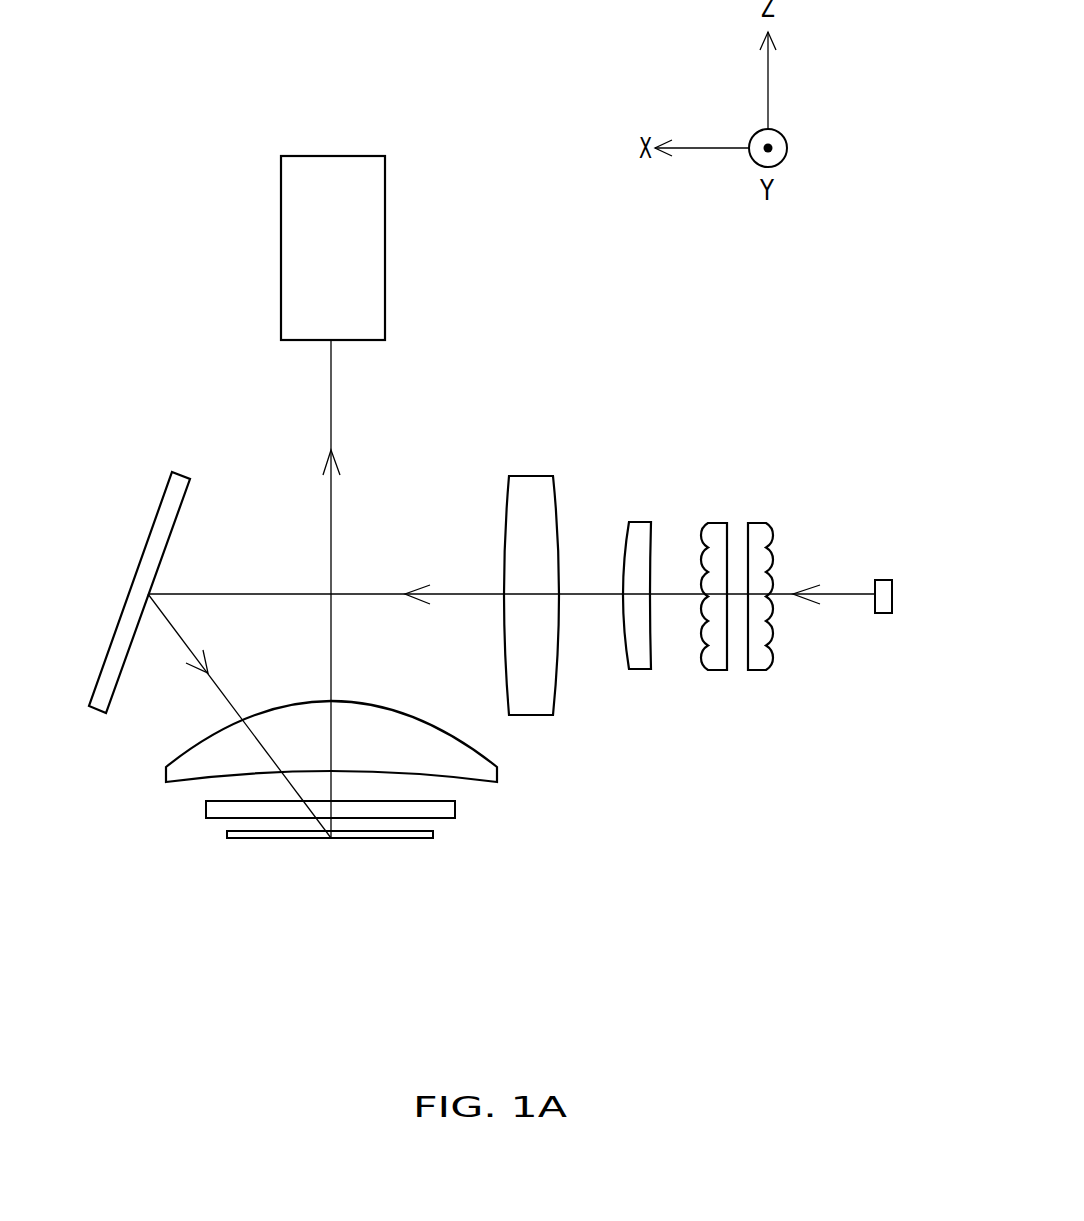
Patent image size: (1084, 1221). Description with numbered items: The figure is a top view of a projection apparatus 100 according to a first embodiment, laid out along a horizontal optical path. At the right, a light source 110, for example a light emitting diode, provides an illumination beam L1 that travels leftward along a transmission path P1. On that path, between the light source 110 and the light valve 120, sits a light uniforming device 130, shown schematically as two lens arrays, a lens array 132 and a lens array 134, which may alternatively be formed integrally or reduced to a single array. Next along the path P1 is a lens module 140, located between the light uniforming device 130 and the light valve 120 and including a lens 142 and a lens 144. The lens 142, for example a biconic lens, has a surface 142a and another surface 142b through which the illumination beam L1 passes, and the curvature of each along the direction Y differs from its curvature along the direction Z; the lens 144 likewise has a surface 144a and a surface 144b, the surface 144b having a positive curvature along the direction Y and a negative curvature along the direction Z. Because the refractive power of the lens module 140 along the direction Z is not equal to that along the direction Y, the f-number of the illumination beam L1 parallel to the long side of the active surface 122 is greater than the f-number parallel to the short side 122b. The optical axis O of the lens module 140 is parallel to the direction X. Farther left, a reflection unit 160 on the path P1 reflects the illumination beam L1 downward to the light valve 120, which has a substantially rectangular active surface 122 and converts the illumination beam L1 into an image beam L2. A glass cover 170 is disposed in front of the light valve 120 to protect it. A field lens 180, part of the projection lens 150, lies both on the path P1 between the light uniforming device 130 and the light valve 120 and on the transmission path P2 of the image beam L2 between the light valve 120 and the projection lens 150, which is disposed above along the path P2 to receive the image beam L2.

The projection apparatus 100 is at (885, 982).
The light source 110 is at (882, 613).
The light valve 120 is at (370, 838).
The active surface 122 is at (258, 816).
The short side 122b is at (227, 835).
The light uniforming device 130 is at (786, 772).
The lens array 132 is at (757, 658).
The lens array 134 is at (717, 660).
The lens module 140 is at (617, 374).
The lens 142 is at (530, 497).
The surface 142a is at (567, 523).
The surface 142b is at (508, 517).
The lens 144 is at (638, 533).
The surface 144a is at (662, 543).
The surface 144b is at (615, 640).
The projection lens 150 is at (303, 283).
The reflection unit 160 is at (168, 512).
The glass cover 170 is at (447, 812).
The field lens 180 is at (480, 773).
The illumination beam L1 is at (862, 594).
The image beam L2 is at (330, 437).
The transmission path P1 is at (831, 594).
The transmission path P2 is at (332, 413).
The optical axis O is at (257, 594).